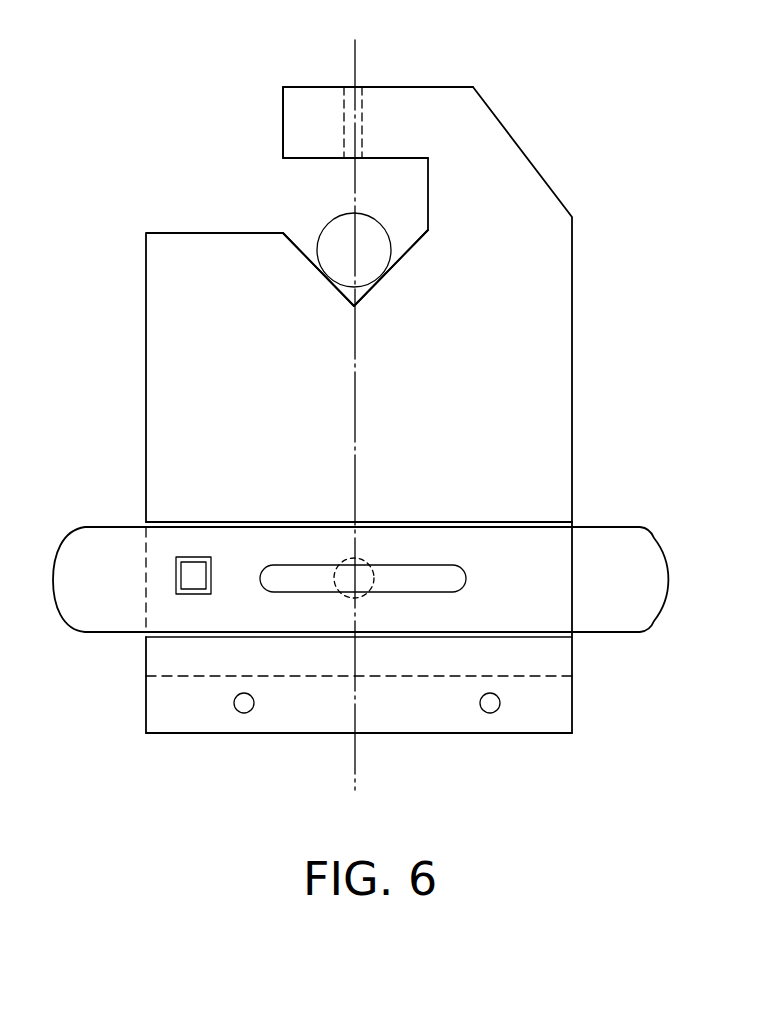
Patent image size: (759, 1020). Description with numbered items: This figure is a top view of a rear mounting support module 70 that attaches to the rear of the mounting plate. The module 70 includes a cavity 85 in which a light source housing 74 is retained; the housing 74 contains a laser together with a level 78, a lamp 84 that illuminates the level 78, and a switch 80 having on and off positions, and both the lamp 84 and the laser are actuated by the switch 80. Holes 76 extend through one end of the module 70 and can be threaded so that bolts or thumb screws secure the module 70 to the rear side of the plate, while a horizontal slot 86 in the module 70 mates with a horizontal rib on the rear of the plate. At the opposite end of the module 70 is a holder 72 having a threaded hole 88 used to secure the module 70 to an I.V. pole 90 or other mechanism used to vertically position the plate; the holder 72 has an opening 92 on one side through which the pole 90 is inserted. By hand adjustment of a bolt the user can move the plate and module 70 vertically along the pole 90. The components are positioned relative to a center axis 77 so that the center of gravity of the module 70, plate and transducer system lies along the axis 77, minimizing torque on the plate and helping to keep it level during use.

The support module 70 is at (560, 317).
The holder 72 is at (240, 139).
The light source housing 74 is at (640, 525).
The holes 76 is at (240, 707).
The center axis 77 is at (357, 750).
The level 78 is at (289, 588).
The switch 80 is at (192, 580).
The lamp 84 is at (376, 557).
The cavity 85 is at (545, 520).
The slot 86 is at (560, 705).
The threaded hole 88 is at (356, 92).
The I.V. pole 90 is at (378, 226).
The opening 92 is at (308, 194).